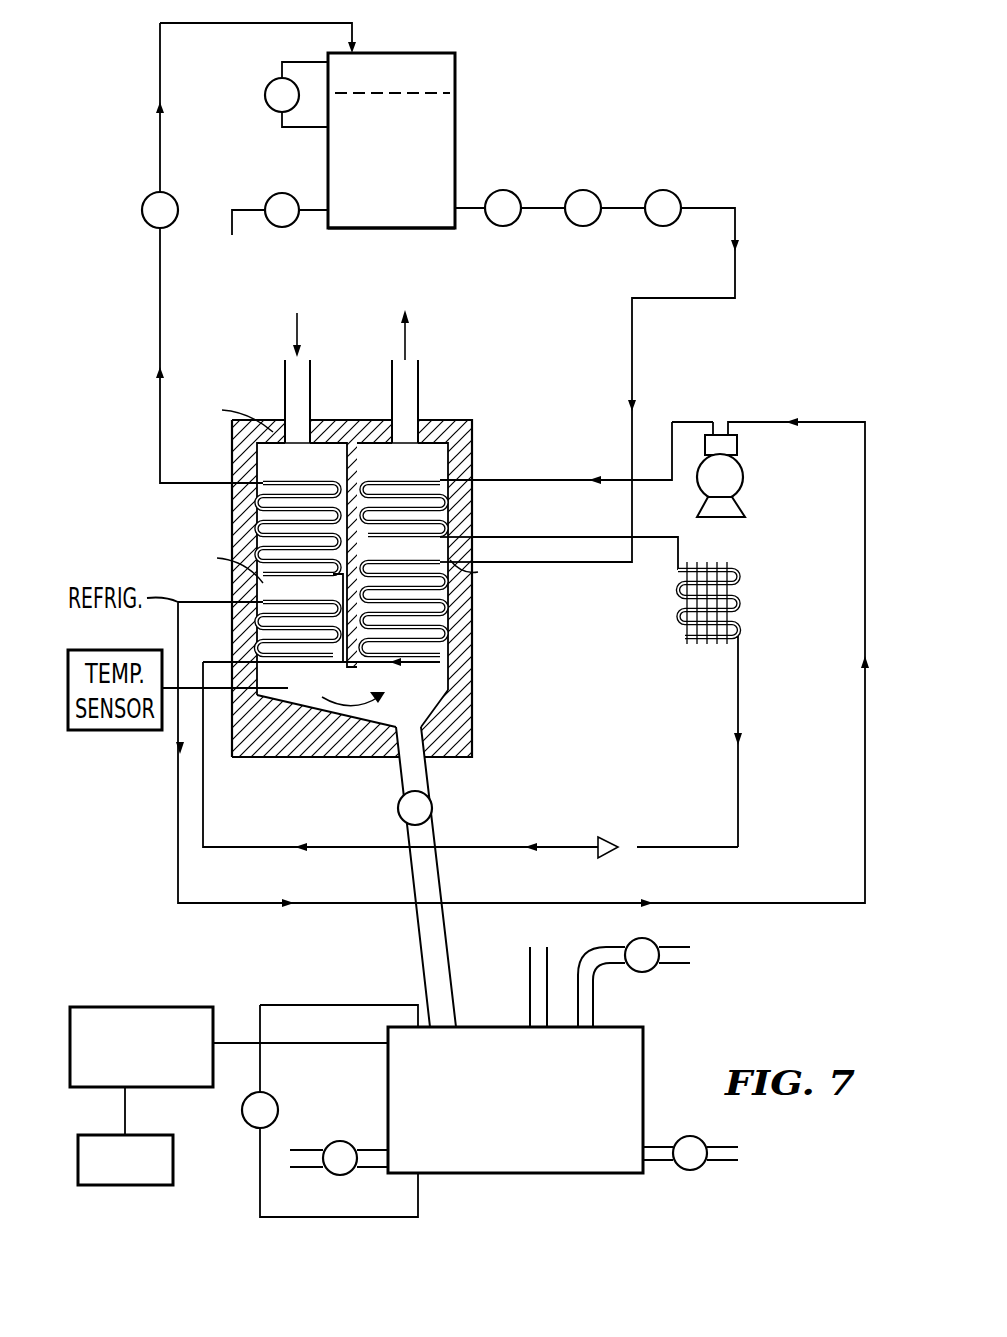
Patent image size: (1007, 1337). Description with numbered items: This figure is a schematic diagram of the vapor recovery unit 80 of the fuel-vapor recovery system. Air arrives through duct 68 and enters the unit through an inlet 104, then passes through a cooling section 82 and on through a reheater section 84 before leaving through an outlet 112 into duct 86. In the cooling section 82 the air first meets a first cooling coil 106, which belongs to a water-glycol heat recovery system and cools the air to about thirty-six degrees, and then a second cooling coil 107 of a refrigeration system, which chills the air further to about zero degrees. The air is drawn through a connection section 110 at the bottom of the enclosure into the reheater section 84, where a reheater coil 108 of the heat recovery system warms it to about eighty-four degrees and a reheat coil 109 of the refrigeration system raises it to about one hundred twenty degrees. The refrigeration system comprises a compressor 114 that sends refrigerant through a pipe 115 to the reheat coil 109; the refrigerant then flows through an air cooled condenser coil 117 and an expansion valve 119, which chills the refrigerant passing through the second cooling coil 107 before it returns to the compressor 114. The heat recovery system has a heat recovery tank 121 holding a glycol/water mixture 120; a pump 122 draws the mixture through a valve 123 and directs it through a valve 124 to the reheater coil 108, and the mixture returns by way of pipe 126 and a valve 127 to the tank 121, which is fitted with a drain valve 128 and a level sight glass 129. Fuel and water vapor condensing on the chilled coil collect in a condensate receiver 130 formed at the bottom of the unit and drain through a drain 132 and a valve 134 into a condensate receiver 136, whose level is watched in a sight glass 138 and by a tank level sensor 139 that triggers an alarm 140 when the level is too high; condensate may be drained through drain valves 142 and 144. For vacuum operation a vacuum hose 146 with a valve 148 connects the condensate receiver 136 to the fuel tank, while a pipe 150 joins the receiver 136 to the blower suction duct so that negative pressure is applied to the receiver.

The duct 68 is at (303, 370).
The vapor recovery unit 80 is at (392, 555).
The cooling section 82 is at (320, 462).
The reheater section 84 is at (440, 688).
The duct 86 is at (412, 385).
The inlet 104 is at (303, 440).
The first cooling coil 106 is at (290, 477).
The second cooling coil 107 is at (287, 627).
The reheater coil 108 is at (455, 625).
The reheat coil 109 is at (455, 497).
The connection section 110 is at (310, 710).
The outlet 112 is at (408, 438).
The compressor 114 is at (742, 477).
The pipe 115 is at (563, 479).
The air cooled condenser coil 117 is at (745, 600).
The expansion valve 119 is at (632, 855).
The glycol/water mixture 120 is at (433, 200).
The heat recovery tank 121 is at (347, 230).
The pump 122 is at (585, 190).
The valve 123 is at (512, 188).
The valve 124 is at (668, 190).
The pipe 126 is at (160, 323).
The valve 127 is at (148, 224).
The drain valve 128 is at (280, 195).
The level sight glass 129 is at (270, 90).
The condensate receiver 130 is at (377, 718).
The drain 132 is at (430, 740).
The valve 134 is at (433, 810).
The condensate receiver 136 is at (488, 1160).
The sight glass 138 is at (250, 1125).
The tank level sensor 139 is at (178, 1007).
The alarm 140 is at (147, 1188).
The drain valve 142 is at (338, 1140).
The drain valve 144 is at (690, 1172).
The vacuum hose 146 is at (683, 965).
The valve 148 is at (643, 973).
The pipe 150 is at (533, 1008).